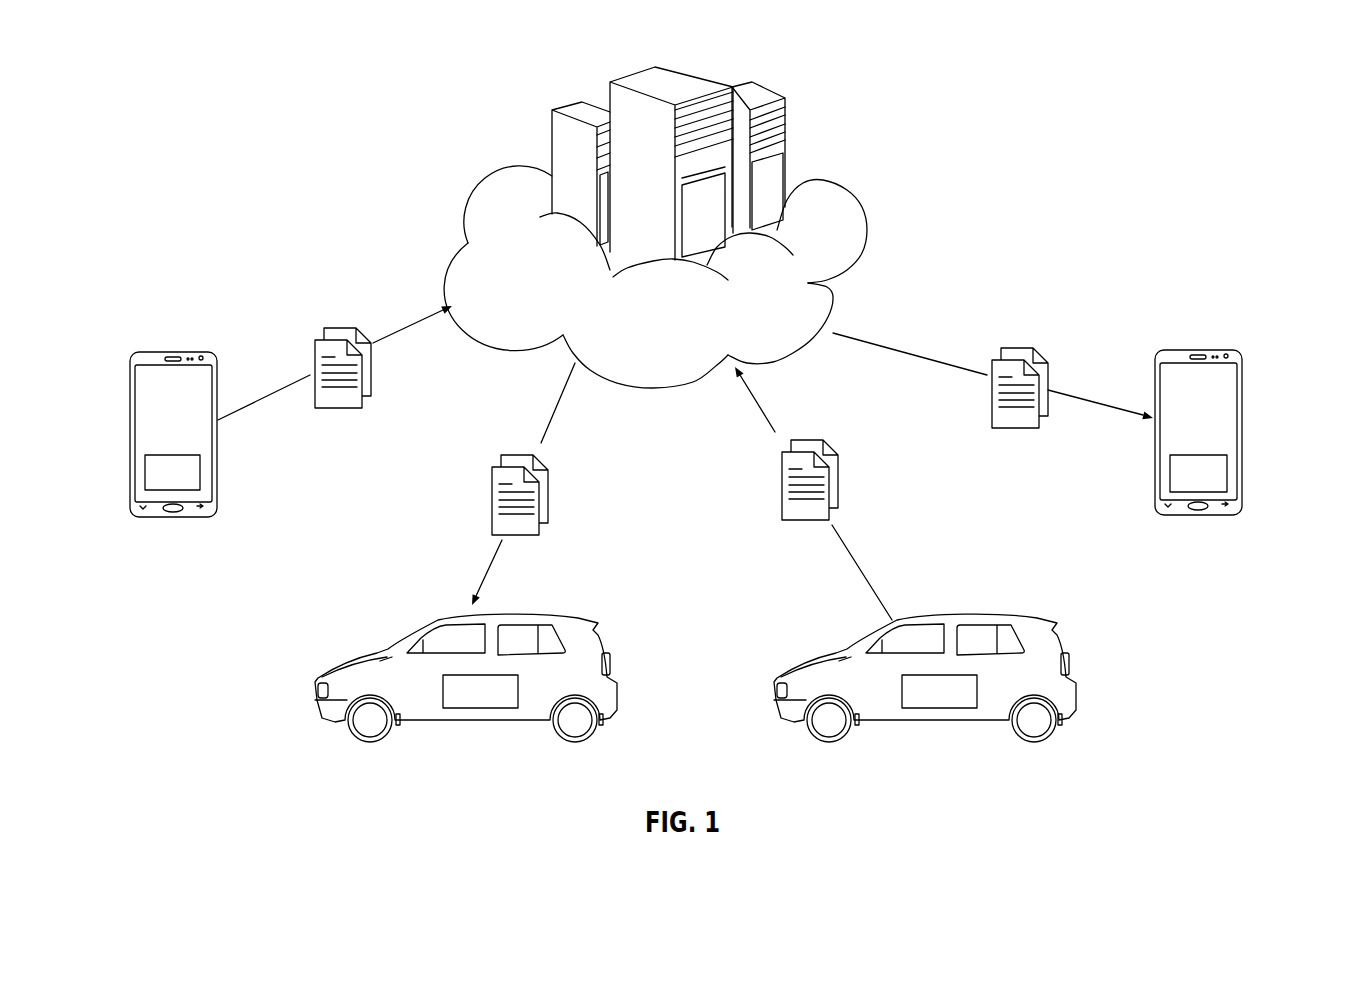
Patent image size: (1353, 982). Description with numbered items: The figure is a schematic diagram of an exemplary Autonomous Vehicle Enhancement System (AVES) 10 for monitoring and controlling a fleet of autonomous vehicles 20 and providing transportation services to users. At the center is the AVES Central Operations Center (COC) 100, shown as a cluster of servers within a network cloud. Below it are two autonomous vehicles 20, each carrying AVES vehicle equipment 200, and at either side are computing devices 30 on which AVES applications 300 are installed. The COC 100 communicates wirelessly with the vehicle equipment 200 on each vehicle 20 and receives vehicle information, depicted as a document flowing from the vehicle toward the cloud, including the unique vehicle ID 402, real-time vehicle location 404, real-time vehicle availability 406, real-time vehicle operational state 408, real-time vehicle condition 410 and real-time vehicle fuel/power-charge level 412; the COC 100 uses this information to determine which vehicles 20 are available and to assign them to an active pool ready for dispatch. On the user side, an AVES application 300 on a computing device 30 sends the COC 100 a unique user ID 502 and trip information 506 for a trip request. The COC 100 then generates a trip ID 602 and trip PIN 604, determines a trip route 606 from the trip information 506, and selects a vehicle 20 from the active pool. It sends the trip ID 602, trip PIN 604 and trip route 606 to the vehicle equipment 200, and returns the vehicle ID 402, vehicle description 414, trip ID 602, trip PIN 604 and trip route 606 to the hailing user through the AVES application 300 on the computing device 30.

The Autonomous Vehicle Enhancement System (AVES) 10 is at (302, 128).
The autonomous vehicle 20 is at (342, 657).
The computing device 30 is at (130, 365).
The AVES Central Operations Center (COC) 100 is at (760, 91).
The AVES vehicle equipment 200 is at (475, 710).
The AVES application 300 is at (144, 472).
The vehicle ID 402 is at (1023, 419).
The real-time vehicle location 404 is at (960, 480).
The real-time vehicle availability 406 is at (960, 480).
The real-time vehicle operational state 408 is at (960, 480).
The real-time vehicle condition 410 is at (960, 480).
The real-time vehicle fuel/power-charge level 412 is at (838, 480).
The vehicle description 414 is at (1015, 347).
The user ID 502 is at (746, 421).
The trip information 506 is at (342, 327).
The trip ID 602 is at (746, 431).
The trip PIN 604 is at (746, 431).
The trip route 606 is at (491, 512).